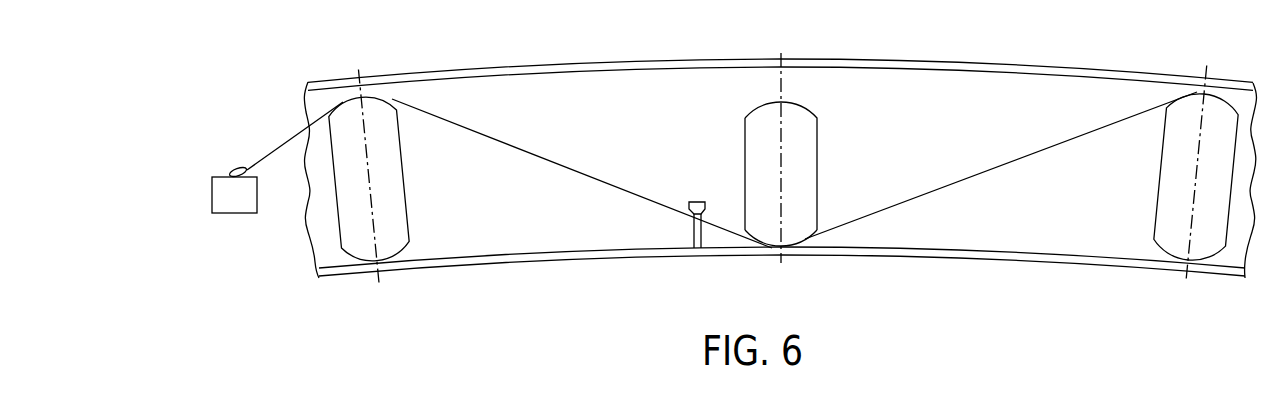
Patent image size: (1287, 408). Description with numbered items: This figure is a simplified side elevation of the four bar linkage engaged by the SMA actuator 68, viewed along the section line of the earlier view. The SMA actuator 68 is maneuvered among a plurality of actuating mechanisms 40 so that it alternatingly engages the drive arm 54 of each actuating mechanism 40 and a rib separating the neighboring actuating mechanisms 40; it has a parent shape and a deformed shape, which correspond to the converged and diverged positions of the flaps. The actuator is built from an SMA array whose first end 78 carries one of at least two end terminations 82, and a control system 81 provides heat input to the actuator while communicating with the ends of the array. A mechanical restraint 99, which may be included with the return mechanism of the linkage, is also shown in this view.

The actuating mechanism 40 is at (808, 157).
The drive arm 54 is at (800, 230).
The SMA actuator 68 is at (592, 178).
The first end 78 is at (282, 142).
The control system 81 is at (238, 209).
The end termination 82 is at (221, 167).
The mechanical restraint 99 is at (697, 185).